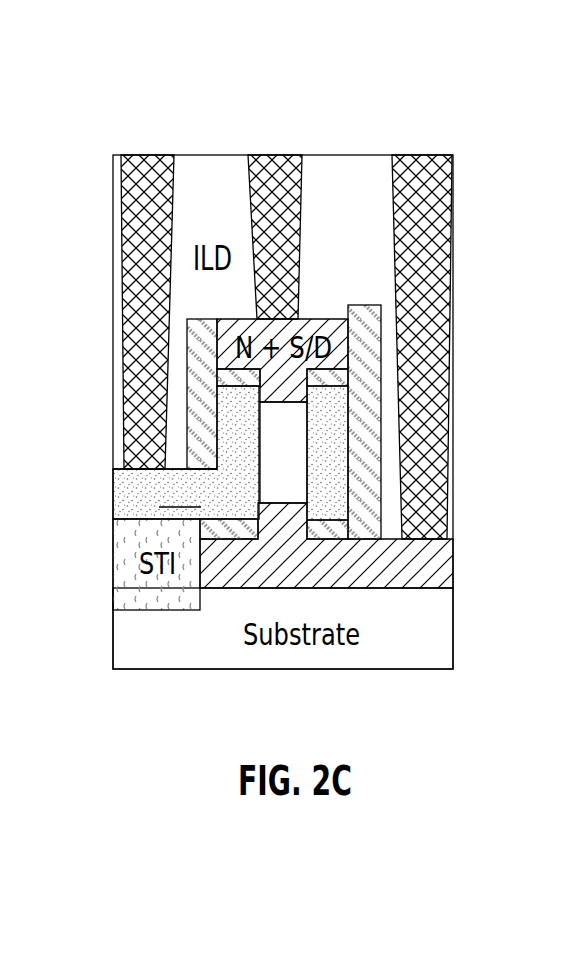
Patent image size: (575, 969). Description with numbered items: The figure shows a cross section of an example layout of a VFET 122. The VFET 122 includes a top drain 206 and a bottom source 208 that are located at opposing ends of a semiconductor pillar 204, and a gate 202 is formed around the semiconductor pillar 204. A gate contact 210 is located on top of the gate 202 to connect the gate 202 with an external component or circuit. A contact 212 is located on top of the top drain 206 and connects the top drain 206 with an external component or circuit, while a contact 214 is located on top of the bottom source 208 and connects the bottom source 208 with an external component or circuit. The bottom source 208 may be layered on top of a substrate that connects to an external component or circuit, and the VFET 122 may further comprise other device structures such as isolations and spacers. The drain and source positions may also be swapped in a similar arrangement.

The VFET 122 is at (290, 58).
The gate 202 is at (337, 488).
The semiconductor pillar 204 is at (293, 447).
The top drain 206 is at (330, 320).
The bottom source 208 is at (438, 577).
The gate contact 210 is at (130, 182).
The contact 212 is at (273, 173).
The contact 214 is at (421, 173).